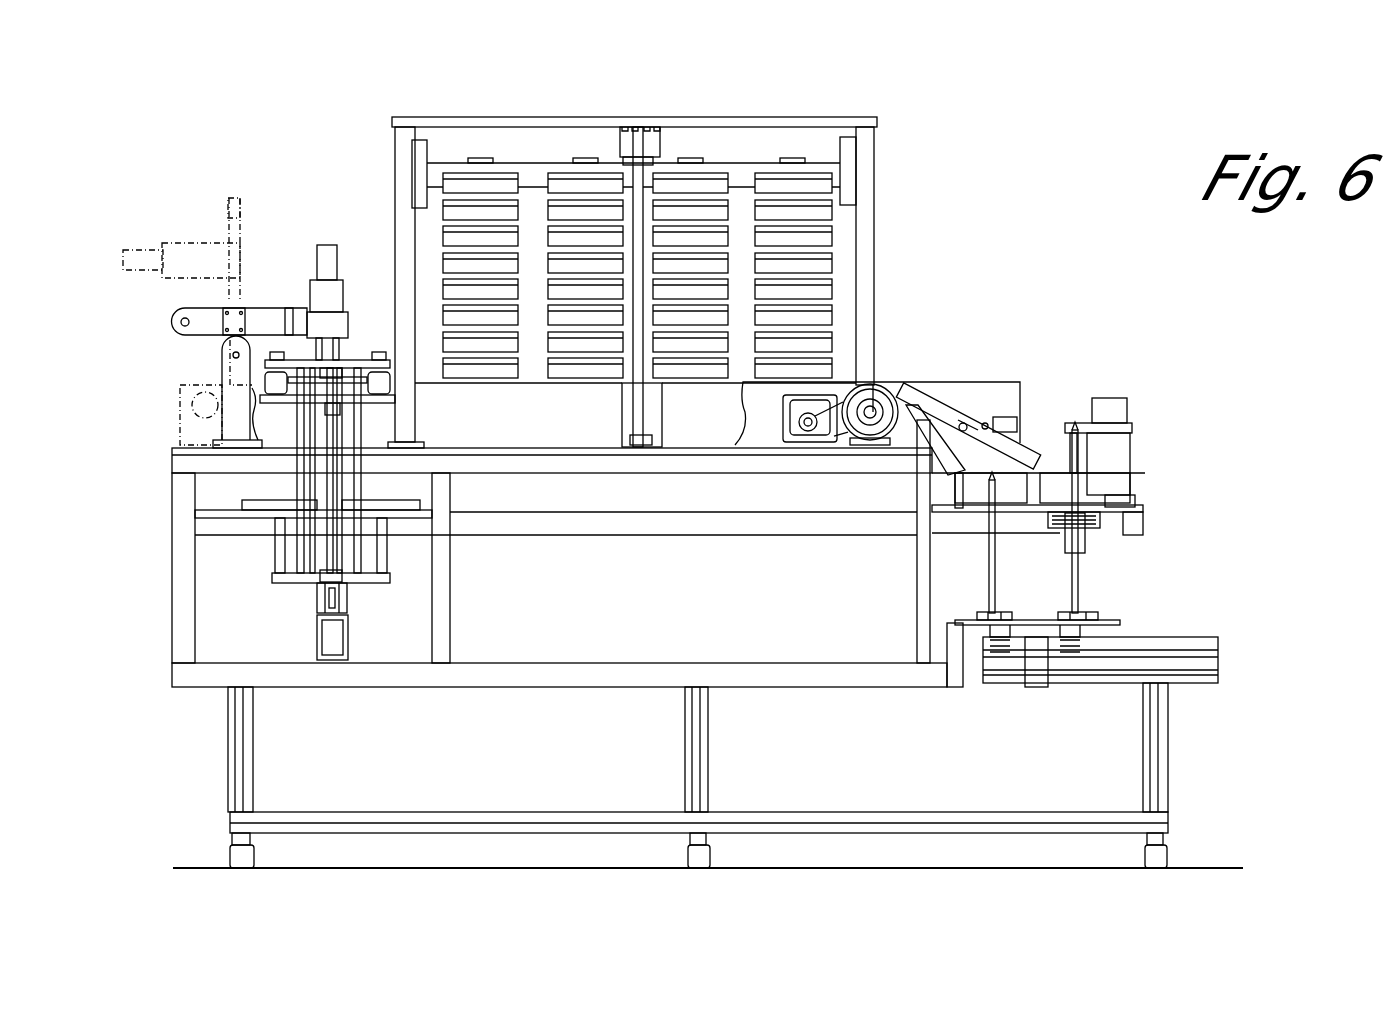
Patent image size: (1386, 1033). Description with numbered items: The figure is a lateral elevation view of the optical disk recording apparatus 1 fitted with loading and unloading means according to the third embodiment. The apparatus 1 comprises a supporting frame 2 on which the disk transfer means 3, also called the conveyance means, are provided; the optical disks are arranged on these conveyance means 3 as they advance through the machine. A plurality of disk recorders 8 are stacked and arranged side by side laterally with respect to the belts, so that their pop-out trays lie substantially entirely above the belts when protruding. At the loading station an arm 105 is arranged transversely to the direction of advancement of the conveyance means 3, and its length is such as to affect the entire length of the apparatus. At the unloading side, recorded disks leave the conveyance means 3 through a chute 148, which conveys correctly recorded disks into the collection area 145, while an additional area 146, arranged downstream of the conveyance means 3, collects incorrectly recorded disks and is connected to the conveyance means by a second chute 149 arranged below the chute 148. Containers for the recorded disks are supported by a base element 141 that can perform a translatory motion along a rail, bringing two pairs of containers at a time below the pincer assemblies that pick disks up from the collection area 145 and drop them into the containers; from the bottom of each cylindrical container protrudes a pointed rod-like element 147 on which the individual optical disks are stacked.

The recording apparatus 1 is at (908, 142).
The supporting frame 2 is at (232, 722).
The disk transfer means 3 is at (848, 387).
The disk recorders 8 is at (483, 187).
The arm 105 is at (340, 317).
The base element 141 is at (1120, 622).
The collection area 145 is at (1093, 487).
The additional unloading area 146 is at (980, 488).
The pointed rod-like element 147 is at (1000, 580).
The chute 148 is at (948, 402).
The second chute 149 is at (913, 440).